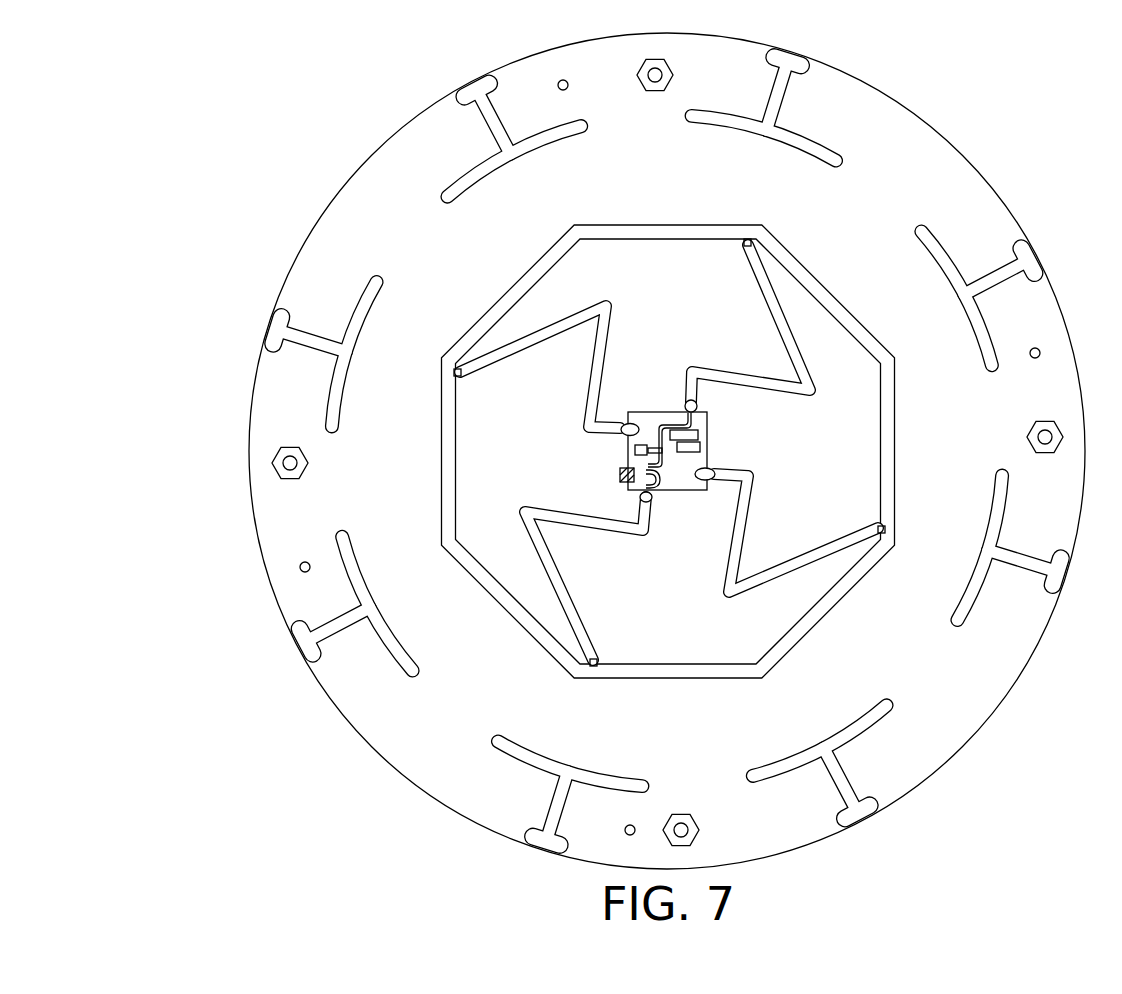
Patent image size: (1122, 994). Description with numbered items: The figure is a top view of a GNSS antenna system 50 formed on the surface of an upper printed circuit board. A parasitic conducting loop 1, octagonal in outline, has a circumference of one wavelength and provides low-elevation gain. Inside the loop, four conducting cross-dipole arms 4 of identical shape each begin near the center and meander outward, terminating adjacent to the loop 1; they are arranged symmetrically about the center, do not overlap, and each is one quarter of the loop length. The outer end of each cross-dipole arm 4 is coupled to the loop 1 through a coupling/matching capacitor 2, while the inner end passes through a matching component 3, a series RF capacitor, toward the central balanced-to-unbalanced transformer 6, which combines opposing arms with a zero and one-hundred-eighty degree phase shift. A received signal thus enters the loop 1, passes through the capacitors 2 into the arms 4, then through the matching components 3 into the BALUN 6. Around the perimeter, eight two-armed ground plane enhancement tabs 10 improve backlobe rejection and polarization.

The GNSS antenna system 50 is at (188, 82).
The ground plane enhancement tab 10 is at (475, 88).
The parasitic conducting loop 1 is at (895, 420).
The coupling/matching capacitor 2 is at (457, 370).
The matching component 3 is at (623, 424).
The conducting cross-dipole arm 4 is at (520, 358).
The balanced-to-unbalanced transformer (BALUN) 6 is at (622, 475).